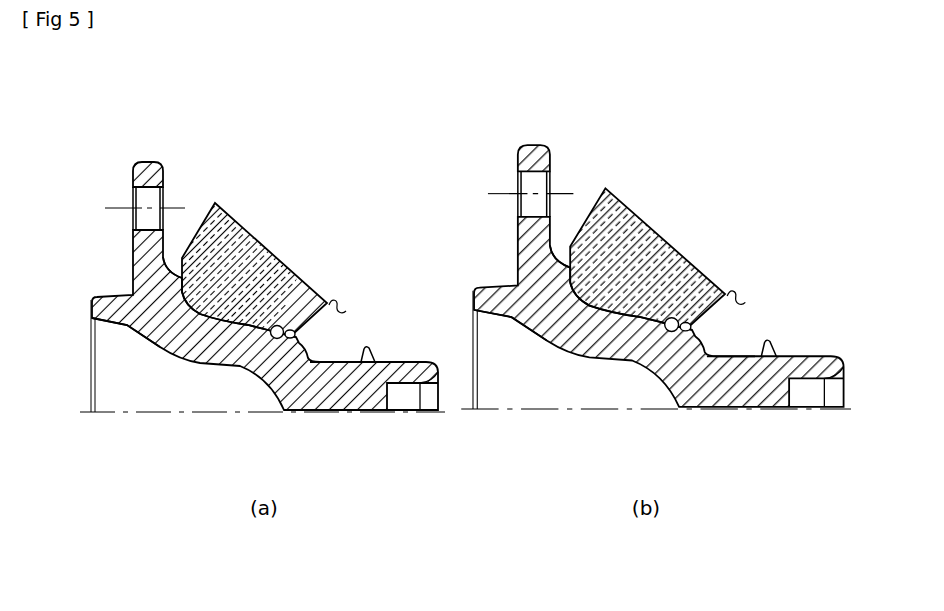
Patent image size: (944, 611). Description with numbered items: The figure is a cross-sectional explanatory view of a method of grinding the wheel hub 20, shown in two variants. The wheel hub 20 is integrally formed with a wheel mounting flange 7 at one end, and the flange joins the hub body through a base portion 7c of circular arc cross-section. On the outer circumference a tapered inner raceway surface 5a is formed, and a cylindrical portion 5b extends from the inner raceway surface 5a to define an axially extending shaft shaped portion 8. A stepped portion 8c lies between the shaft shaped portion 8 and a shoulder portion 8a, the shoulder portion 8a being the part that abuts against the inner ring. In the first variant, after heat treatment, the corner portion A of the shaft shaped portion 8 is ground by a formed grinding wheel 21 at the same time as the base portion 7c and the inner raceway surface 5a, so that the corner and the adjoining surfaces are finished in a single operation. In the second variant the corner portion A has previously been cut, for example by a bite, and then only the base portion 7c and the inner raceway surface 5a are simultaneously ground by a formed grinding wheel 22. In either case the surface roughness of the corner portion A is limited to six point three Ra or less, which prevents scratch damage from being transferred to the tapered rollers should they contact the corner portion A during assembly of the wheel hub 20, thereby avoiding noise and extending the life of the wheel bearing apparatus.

The inner raceway surface 5a is at (217, 305).
The cylindrical portion 5b is at (363, 348).
The wheel mounting flange 7 is at (148, 177).
The base portion 7c is at (197, 285).
The shaft shaped portion 8 is at (270, 318).
The shoulder portion 8a is at (322, 363).
The stepped portion 8c is at (272, 348).
The wheel hub 20 is at (165, 323).
The formed grinding wheel 21 is at (258, 243).
The formed grinding wheel 22 is at (650, 250).
The corner portion A is at (481, 316).